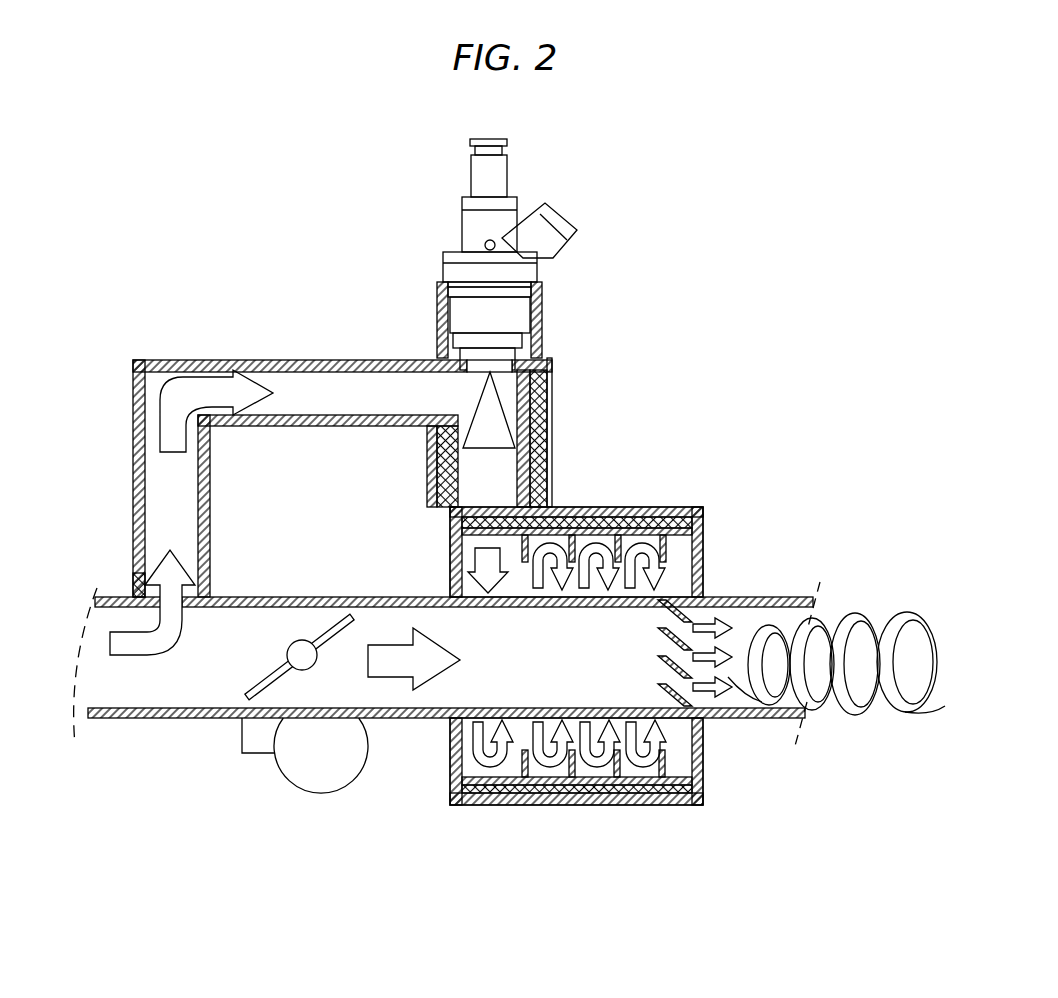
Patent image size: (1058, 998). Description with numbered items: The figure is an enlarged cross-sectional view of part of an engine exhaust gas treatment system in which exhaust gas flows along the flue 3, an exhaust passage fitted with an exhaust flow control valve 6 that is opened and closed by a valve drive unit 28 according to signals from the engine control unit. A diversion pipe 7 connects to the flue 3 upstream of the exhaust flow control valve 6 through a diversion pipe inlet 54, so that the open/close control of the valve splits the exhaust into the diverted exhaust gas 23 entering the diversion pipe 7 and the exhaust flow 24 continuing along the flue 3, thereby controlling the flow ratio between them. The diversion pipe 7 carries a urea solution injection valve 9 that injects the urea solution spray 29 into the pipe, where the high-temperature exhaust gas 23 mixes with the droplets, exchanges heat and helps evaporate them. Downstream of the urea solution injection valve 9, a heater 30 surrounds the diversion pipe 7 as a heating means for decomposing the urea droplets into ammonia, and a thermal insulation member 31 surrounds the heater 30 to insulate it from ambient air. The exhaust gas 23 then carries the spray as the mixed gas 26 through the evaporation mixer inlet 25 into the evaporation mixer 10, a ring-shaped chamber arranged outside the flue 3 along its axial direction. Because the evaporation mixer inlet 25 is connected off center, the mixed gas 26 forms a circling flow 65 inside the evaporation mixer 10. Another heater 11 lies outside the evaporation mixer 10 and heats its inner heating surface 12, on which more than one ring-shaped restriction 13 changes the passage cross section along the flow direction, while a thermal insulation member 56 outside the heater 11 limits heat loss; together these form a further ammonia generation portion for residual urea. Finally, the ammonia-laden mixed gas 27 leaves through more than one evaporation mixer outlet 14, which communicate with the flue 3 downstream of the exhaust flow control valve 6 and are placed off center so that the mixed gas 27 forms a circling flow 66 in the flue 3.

The flue 3 is at (197, 690).
The exhaust flow control valve 6 is at (280, 620).
The diversion pipe 7 is at (324, 372).
The urea solution injection valve 9 is at (553, 228).
The evaporation mixer 10 is at (605, 513).
The heater 11 is at (690, 507).
The heating surface 12 is at (703, 537).
The restriction 13 is at (647, 517).
The evaporation mixer outlet 14 is at (705, 712).
The exhaust gas 23 is at (137, 648).
The exhaust flow 24 is at (426, 665).
The evaporation mixer inlet 25 is at (552, 490).
The mixed gas 26 is at (486, 570).
The mixed gas 27 is at (735, 622).
The valve drive unit 28 is at (315, 780).
The urea solution spray 29 is at (528, 380).
The heater 30 is at (552, 405).
The thermal insulation member 31 is at (540, 385).
The diversion pipe inlet 54 is at (133, 573).
The thermal insulation member 56 is at (670, 805).
The circling flow 65 is at (633, 762).
The circling flow 66 is at (863, 617).